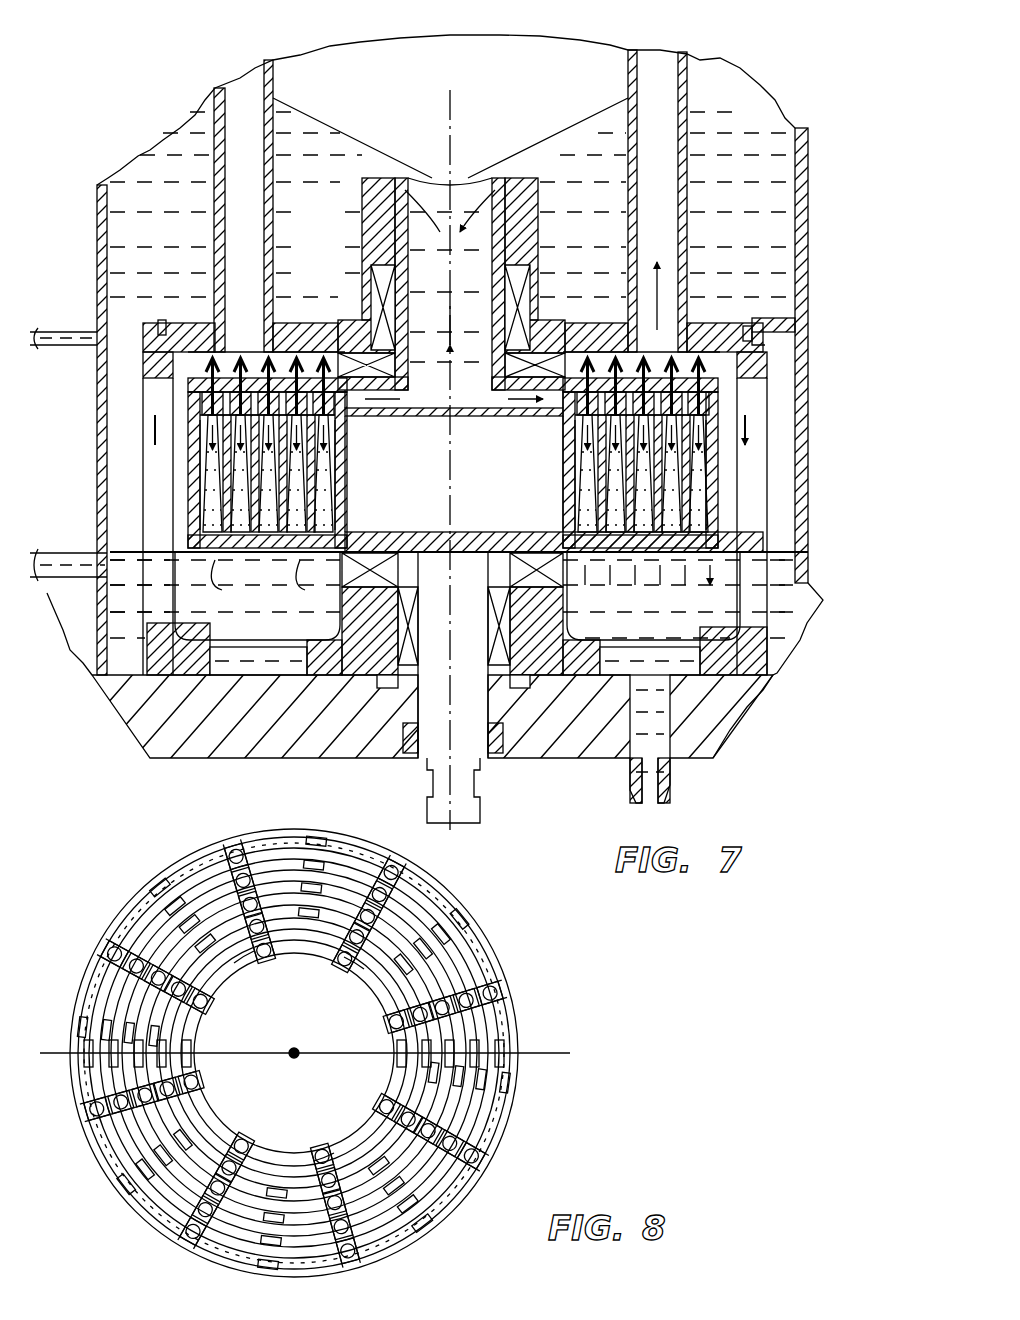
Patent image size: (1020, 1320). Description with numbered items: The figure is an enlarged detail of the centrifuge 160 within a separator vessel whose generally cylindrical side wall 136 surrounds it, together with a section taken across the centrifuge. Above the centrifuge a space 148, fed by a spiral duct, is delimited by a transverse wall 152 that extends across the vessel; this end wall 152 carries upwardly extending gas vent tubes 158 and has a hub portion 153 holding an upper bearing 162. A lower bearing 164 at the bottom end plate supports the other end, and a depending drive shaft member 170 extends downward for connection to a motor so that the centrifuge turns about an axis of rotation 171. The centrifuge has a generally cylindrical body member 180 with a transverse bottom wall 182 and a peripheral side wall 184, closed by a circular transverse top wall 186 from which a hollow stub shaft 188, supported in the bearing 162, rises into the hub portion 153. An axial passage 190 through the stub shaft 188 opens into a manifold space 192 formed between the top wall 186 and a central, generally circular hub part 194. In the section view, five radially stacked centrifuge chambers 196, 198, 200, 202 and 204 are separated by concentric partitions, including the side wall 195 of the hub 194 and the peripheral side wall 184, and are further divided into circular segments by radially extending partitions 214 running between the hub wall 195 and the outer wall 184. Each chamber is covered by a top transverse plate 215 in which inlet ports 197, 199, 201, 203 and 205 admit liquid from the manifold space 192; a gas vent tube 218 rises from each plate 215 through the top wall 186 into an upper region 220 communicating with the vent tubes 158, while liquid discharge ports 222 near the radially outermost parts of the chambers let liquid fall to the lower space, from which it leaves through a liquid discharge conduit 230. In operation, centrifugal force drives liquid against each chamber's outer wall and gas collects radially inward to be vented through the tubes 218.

In FIG. 7, the side wall 136 is at (800, 140).
In FIG. 7, the space 148 is at (470, 82).
In FIG. 7, the transverse wall 152 is at (800, 322).
In FIG. 7, the hub portion 153 is at (362, 245).
In FIG. 7, the vent tubes 158 is at (275, 88).
In FIG. 7, the centrifuge 160 is at (730, 522).
In FIG. 8, the centrifuge 160 is at (530, 1030).
In FIG. 7, the upper bearing 162 is at (372, 285).
In FIG. 7, the lower bearing 164 is at (515, 660).
In FIG. 7, the drive shaft member 170 is at (478, 772).
In FIG. 7, the axis of rotation 171 is at (452, 130).
In FIG. 8, the axis of rotation 171 is at (294, 1062).
In FIG. 7, the body member 180 is at (720, 552).
In FIG. 8, the body member 180 is at (152, 1226).
In FIG. 7, the bottom wall 182 is at (628, 575).
In FIG. 7, the peripheral side wall 184 is at (720, 478).
In FIG. 8, the peripheral side wall 184 is at (507, 990).
In FIG. 7, the top wall 186 is at (760, 372).
In FIG. 7, the stub shaft 188 is at (515, 232).
In FIG. 7, the passage 190 is at (472, 359).
In FIG. 7, the manifold space 192 is at (454, 474).
In FIG. 7, the hub part 194 is at (440, 418).
In FIG. 8, the hub part 194 is at (323, 1034).
In FIG. 7, the side wall of the hub 195 is at (340, 478).
In FIG. 7, the centrifuge chamber 196 is at (205, 460).
In FIG. 8, the centrifuge chamber 196 is at (500, 958).
In FIG. 8, the inlet port 197 is at (296, 838).
In FIG. 8, the centrifuge chamber 198 is at (472, 935).
In FIG. 8, the inlet port 199 is at (176, 880).
In FIG. 7, the centrifuge chamber 200 is at (563, 479).
In FIG. 8, the centrifuge chamber 200 is at (457, 905).
In FIG. 8, the inlet port 201 is at (263, 838).
In FIG. 7, the centrifuge chamber 202 is at (335, 505).
In FIG. 8, the centrifuge chamber 202 is at (320, 1030).
In FIG. 8, the inlet port 203 is at (310, 1105).
In FIG. 7, the centrifuge chamber 204 is at (345, 455).
In FIG. 8, the centrifuge chamber 204 is at (312, 995).
In FIG. 8, the inlet port 205 is at (268, 972).
In FIG. 8, the radially-extending partitions 214 is at (338, 842).
In FIG. 8, the top transverse plate 215 is at (530, 1020).
In FIG. 7, the gas vent tube 218 is at (270, 365).
In FIG. 8, the gas vent tube 218 is at (232, 842).
In FIG. 7, the upper region 220 is at (745, 336).
In FIG. 7, the liquid discharge ports 222 is at (288, 608).
In FIG. 7, the liquid discharge conduit 230 is at (672, 785).